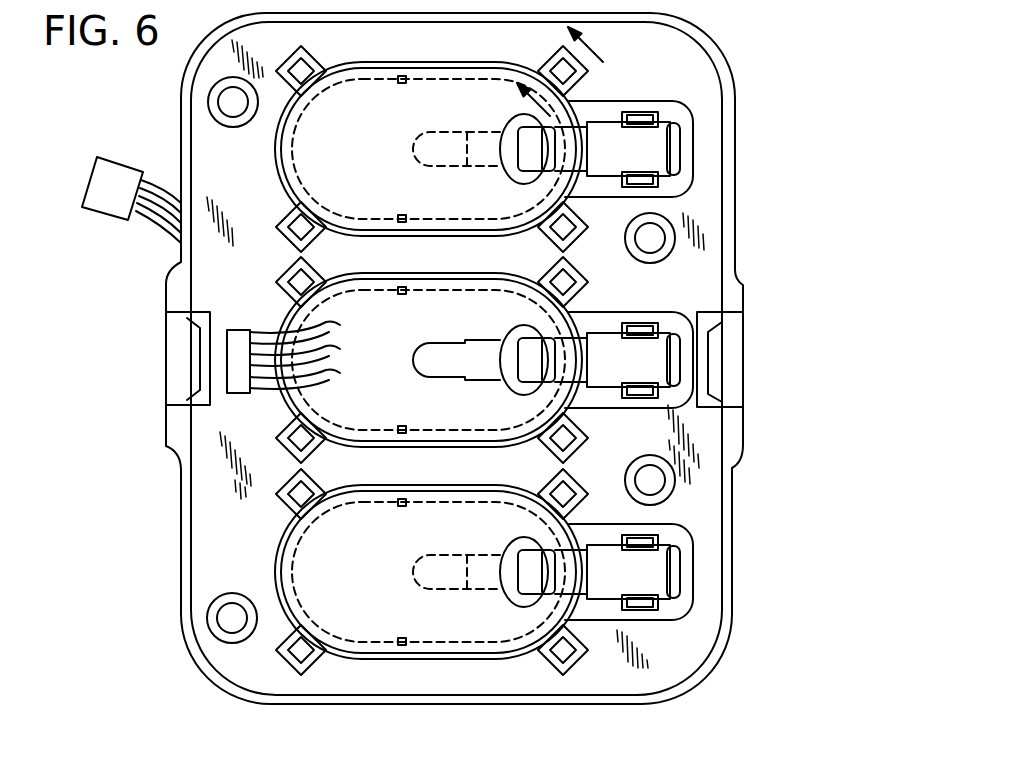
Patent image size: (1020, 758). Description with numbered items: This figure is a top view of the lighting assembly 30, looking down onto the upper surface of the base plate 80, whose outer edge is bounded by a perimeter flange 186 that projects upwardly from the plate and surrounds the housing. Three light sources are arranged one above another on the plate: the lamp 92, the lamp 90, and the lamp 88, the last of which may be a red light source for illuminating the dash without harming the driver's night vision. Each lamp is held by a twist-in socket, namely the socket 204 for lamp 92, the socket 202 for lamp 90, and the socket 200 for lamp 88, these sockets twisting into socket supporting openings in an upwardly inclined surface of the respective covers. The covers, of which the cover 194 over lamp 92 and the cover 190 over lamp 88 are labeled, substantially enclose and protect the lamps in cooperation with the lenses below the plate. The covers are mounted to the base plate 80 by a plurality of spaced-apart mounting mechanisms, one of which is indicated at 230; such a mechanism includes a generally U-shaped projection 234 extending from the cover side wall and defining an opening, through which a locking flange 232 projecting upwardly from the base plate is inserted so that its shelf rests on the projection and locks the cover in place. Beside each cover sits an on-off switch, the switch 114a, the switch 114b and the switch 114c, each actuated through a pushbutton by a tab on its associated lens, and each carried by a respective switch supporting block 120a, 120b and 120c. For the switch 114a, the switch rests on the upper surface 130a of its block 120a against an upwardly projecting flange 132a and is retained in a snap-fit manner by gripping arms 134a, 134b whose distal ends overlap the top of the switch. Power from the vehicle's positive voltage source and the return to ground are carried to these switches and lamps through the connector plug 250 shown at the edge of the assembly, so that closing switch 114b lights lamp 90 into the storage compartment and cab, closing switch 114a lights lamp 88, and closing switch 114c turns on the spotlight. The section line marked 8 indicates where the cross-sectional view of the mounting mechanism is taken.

The lighting assembly 30 is at (160, 623).
The base plate 80 is at (597, 678).
The perimeter flange 186 is at (693, 680).
The connector plug 250 is at (108, 162).
The cover 194 is at (318, 163).
The cover 190 is at (303, 538).
The locking flange 232 is at (543, 64).
The U-shaped projection 234 is at (562, 55).
The mounting mechanism 230 is at (617, 66).
The section line 8- 8 is at (562, 72).
The lamp 92 is at (417, 160).
The lamp 90 is at (427, 363).
The lamp 88 is at (417, 573).
The socket 204 is at (515, 173).
The socket 202 is at (515, 387).
The socket 200 is at (513, 598).
The upper surface 130a is at (613, 110).
The switch supporting block 120a is at (693, 173).
The switch supporting block 120b is at (670, 402).
The switch supporting block 120c is at (680, 565).
The on-off switch 114a is at (658, 138).
The switch 114b is at (658, 355).
The switch 114c is at (655, 578).
The upwardly projecting flange 132a is at (678, 145).
The gripping arm 134a is at (650, 107).
The gripping arm 134b is at (643, 188).